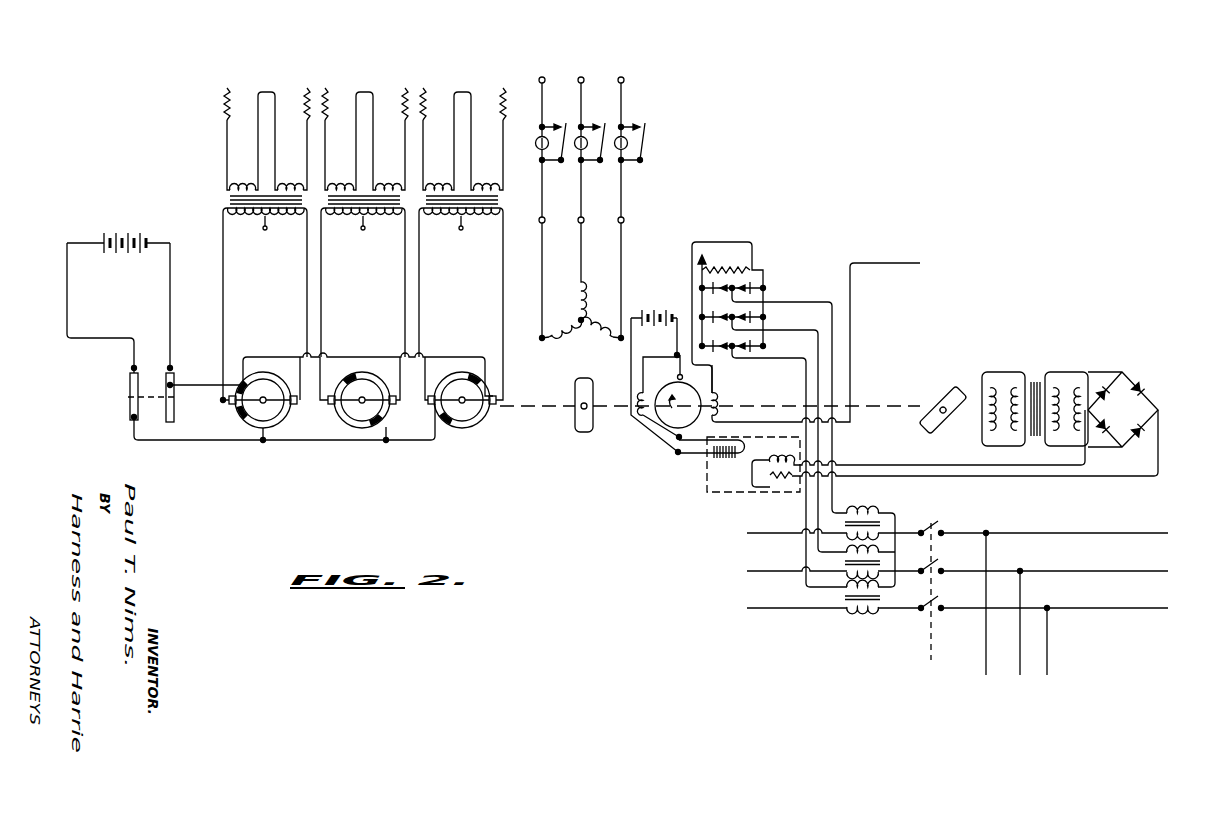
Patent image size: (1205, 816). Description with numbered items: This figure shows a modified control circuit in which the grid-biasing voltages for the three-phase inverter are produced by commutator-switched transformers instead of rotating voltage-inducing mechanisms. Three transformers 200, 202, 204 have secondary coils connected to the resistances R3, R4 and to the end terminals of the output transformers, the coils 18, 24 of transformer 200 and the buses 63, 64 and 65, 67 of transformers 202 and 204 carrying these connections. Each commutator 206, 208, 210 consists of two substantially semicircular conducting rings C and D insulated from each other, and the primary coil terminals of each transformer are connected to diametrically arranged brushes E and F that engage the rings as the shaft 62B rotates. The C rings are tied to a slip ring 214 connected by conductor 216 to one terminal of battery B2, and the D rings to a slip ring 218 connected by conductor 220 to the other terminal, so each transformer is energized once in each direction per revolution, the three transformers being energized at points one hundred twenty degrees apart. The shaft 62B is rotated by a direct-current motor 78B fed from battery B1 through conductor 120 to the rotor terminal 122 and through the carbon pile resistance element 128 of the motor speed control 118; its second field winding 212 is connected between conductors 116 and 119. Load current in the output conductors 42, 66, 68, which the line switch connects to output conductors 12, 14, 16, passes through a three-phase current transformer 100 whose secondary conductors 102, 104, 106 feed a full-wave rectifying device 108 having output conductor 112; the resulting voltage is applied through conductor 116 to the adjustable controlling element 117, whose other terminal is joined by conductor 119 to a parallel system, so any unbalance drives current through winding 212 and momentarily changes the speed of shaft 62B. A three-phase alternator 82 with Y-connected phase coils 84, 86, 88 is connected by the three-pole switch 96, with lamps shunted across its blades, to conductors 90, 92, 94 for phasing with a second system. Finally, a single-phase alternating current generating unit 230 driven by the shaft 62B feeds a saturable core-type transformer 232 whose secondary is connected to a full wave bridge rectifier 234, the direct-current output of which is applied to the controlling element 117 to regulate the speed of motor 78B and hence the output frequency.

The output conductor 12 is at (1050, 650).
The output conductor 14 is at (1018, 651).
The output conductor 16 is at (982, 647).
The primary winding 18 is at (258, 142).
The primary winding 24 is at (275, 146).
The conductor 42 is at (780, 608).
The bus 63 is at (356, 148).
The bus 64 is at (373, 150).
The bus 65 is at (454, 148).
The conductor 66 is at (778, 571).
The bus 67 is at (471, 150).
The conductor 68 is at (778, 535).
The direct current motor 78B is at (650, 446).
The three-phase alternator 82 is at (575, 318).
The phase coil 84 is at (572, 320).
The phase coil 86 is at (592, 321).
The phase coil 88 is at (585, 285).
The conductor 90 is at (543, 107).
The conductor 92 is at (622, 107).
The conductor 94 is at (582, 107).
The three-pole switch 96 is at (652, 133).
The three-phase current transformer 100 is at (855, 623).
The transformer secondary output conductor 102 is at (804, 507).
The transformer secondary output conductor 104 is at (816, 521).
The transformer secondary output conductor 106 is at (835, 502).
The full-wave three-phase rectifying device 108 is at (774, 277).
The D. C. output conductor 112 is at (718, 268).
The conductor 116 is at (739, 242).
The adjustable controlling element 117 is at (796, 458).
The D. C. motor speed control 118 is at (704, 490).
The conductor 119 is at (920, 263).
The conductor 120 is at (631, 342).
The motor rotor terminal 122 is at (685, 460).
The carbon pile resistance element 128 is at (713, 456).
The transformer 200 is at (219, 207).
The transformer 202 is at (361, 234).
The transformer 204 is at (459, 237).
The commutator 206 is at (238, 413).
The commutator 208 is at (340, 424).
The commutator 210 is at (437, 419).
The second field winding 212 is at (719, 396).
The slip ring 214 is at (162, 375).
The conductor 216 is at (170, 309).
The slip ring 218 is at (128, 379).
The conductor 220 is at (67, 299).
The single-phase alternating current generating unit 230 is at (962, 371).
The transformer 232 is at (1037, 368).
The full wave bridge rectifier 234 is at (1147, 374).
The shaft 62B is at (556, 410).
The battery B1 is at (663, 311).
The battery B2 is at (116, 232).
The resistance R3 is at (227, 88).
The resistance R4 is at (307, 90).
The semicircular conducting ring C is at (280, 378).
The semicircular conducting ring D is at (251, 428).
The brush E is at (230, 406).
The brush F is at (295, 404).